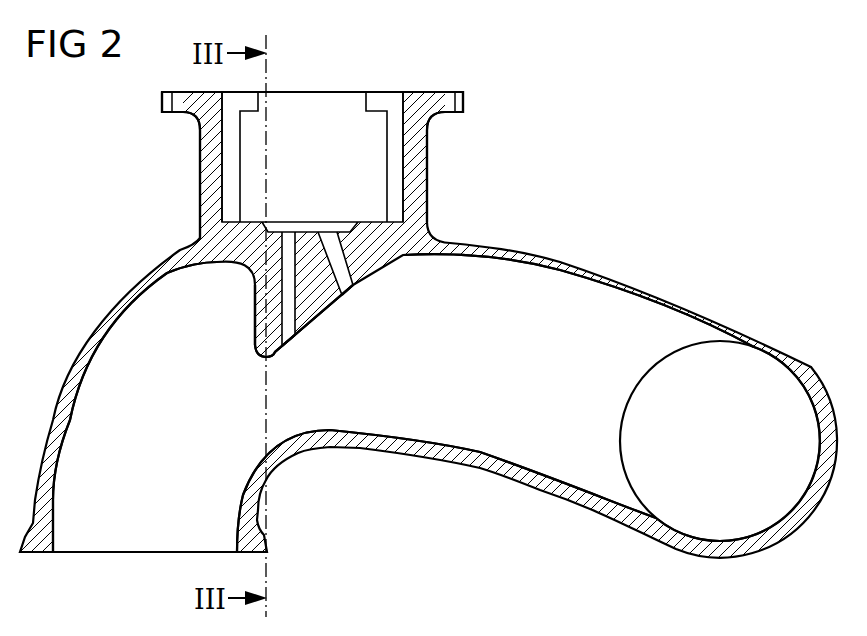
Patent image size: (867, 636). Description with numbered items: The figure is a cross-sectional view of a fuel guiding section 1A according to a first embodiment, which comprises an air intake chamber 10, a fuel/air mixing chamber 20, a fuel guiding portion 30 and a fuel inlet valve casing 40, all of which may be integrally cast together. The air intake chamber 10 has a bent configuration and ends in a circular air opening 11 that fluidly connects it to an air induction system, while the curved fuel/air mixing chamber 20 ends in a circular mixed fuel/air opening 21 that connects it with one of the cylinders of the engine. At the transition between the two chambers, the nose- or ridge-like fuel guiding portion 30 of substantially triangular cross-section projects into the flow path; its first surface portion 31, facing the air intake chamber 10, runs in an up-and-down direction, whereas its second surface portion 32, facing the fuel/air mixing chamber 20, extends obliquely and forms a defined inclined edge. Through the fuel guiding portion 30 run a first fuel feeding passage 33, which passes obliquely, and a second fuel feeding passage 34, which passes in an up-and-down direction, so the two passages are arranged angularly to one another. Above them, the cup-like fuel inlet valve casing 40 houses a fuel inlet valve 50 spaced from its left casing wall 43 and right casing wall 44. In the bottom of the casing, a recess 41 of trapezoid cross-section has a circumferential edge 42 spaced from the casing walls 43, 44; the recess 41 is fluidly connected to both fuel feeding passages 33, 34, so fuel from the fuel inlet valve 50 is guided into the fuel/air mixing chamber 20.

The fuel guiding section 1A is at (572, 198).
The air intake chamber 10 is at (170, 463).
The air opening 11 is at (123, 553).
The fuel/air mixing chamber 20 is at (475, 371).
The mixed fuel/air opening 21 is at (740, 456).
The fuel guiding portion 30 is at (317, 295).
The first surface portion 31 is at (255, 318).
The second surface portion 32 is at (318, 325).
The first fuel feeding passage 33 is at (347, 287).
The second fuel feeding passage 34 is at (290, 331).
The fuel inlet valve casing 40 is at (428, 168).
The recess 41 is at (297, 222).
The circumferential edge 42 is at (358, 222).
The left casing wall 43 is at (222, 155).
The right casing wall 44 is at (403, 155).
The fuel inlet valve 50 is at (317, 120).